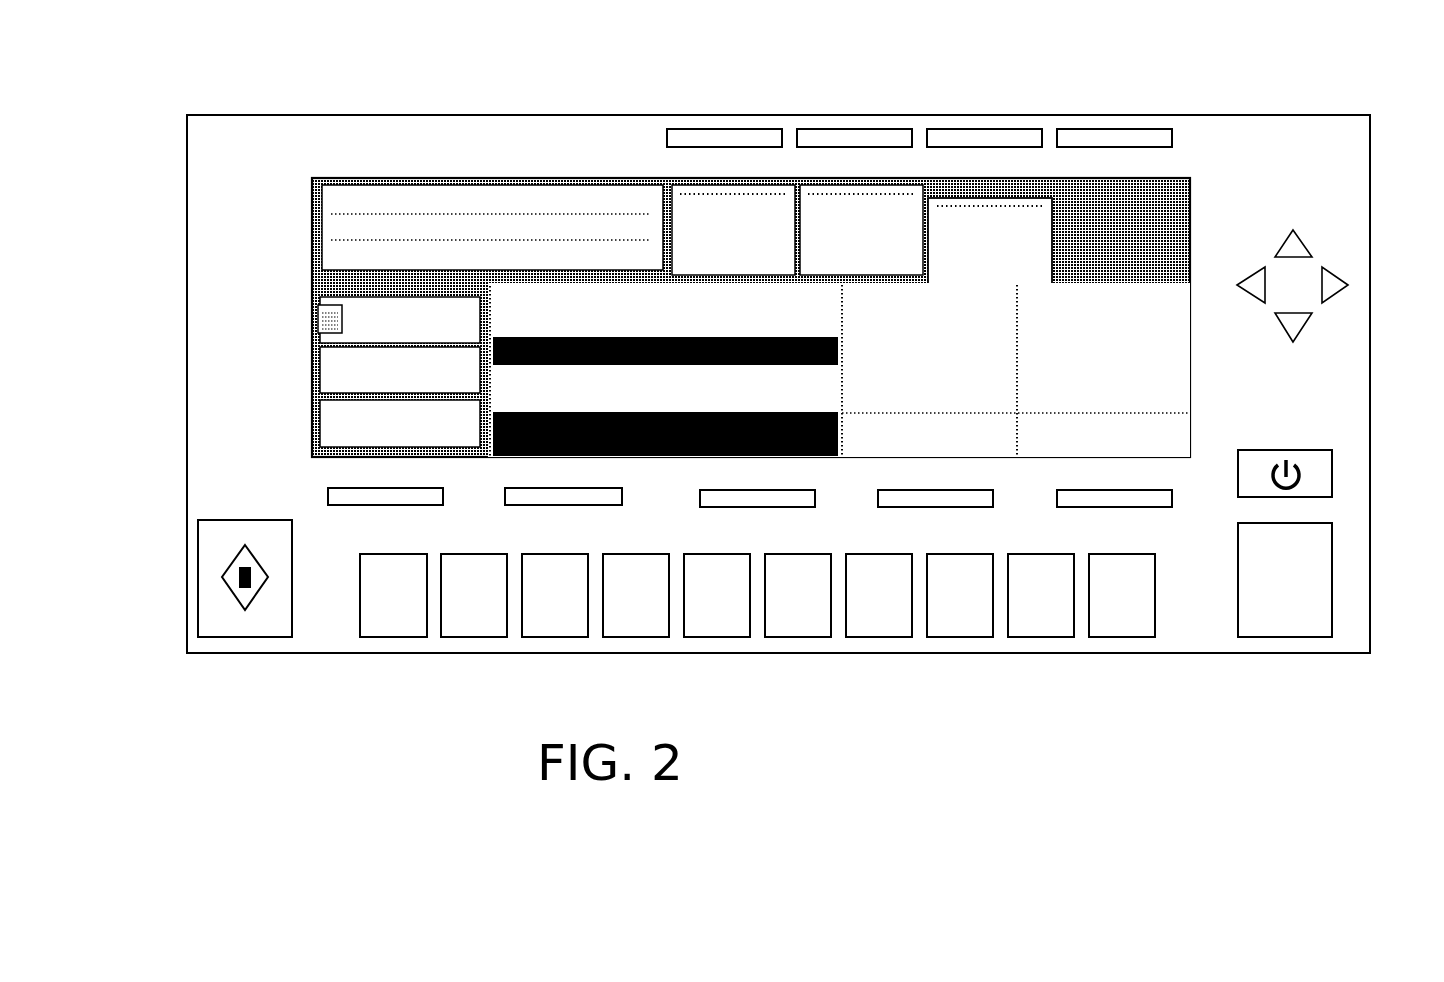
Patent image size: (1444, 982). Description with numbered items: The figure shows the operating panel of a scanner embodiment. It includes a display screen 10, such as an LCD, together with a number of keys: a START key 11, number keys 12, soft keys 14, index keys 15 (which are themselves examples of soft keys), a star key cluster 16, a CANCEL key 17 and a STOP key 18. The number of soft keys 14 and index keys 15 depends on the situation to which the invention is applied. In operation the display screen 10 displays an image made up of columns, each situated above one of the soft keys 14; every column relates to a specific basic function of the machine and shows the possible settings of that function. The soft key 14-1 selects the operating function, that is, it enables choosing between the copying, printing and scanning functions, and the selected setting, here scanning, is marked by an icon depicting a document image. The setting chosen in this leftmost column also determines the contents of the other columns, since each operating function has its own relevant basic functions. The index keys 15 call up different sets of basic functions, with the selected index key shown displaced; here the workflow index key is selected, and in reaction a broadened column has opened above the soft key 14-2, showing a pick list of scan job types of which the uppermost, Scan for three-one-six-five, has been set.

The display screen 10 is at (393, 178).
The START key 11 is at (293, 602).
The number keys 12 is at (1180, 596).
The soft keys 14 is at (1196, 499).
The soft key 14-1 is at (355, 488).
The soft key 14-2 is at (532, 507).
The index keys 15 is at (1212, 141).
The star key cluster 16 is at (1334, 225).
The CANCEL key 17 is at (1333, 552).
The STOP key 18 is at (1333, 477).